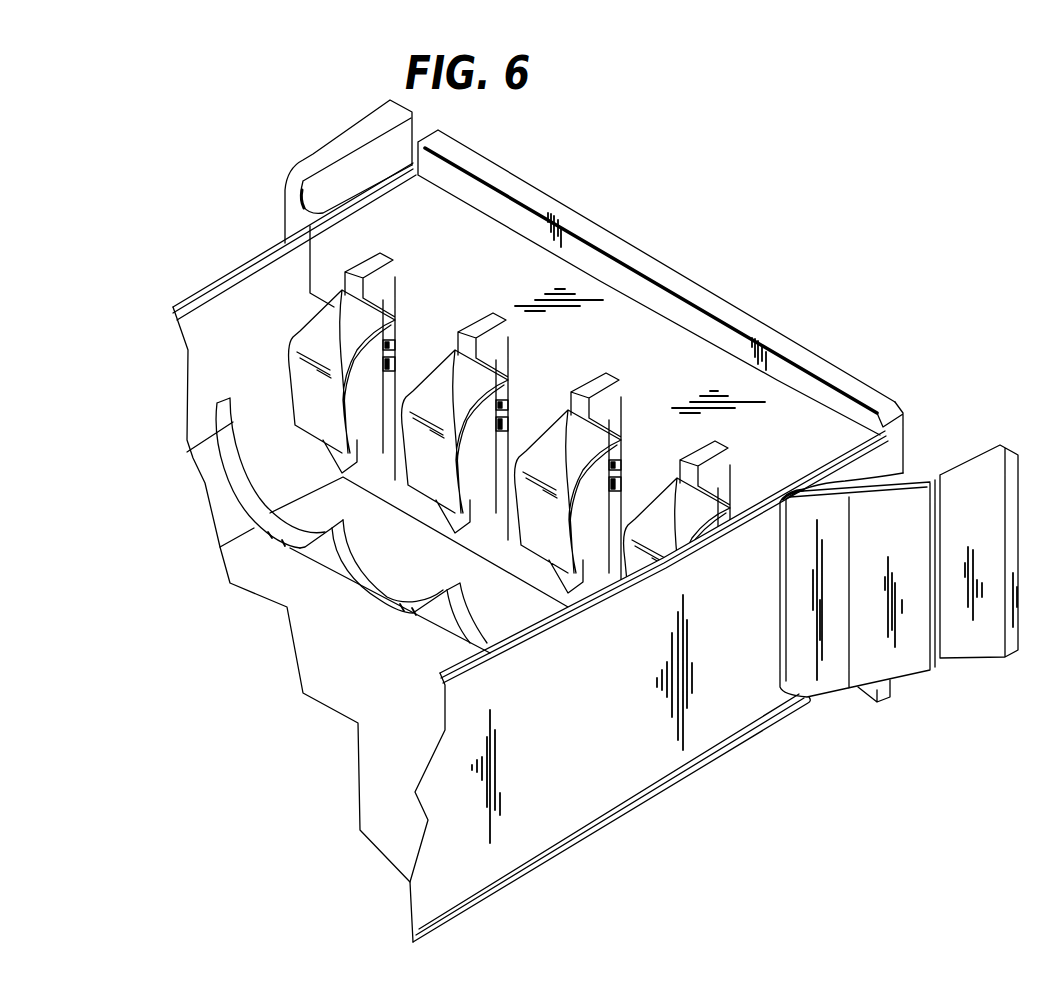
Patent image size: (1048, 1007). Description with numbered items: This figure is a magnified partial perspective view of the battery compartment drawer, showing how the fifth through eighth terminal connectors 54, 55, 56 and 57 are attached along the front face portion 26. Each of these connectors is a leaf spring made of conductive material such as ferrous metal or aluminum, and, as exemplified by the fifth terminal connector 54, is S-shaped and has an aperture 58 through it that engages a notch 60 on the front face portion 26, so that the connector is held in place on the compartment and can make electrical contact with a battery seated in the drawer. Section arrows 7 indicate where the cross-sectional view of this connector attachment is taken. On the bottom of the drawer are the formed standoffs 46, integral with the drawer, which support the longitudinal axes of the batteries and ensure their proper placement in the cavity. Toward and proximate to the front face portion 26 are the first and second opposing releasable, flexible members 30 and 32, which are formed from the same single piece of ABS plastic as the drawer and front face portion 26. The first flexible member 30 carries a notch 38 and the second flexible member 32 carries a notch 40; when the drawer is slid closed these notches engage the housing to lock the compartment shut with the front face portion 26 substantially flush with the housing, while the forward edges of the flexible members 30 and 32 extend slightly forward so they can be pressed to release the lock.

The section line 7- 7 is at (320, 391).
The front face portion 26 is at (762, 316).
The first flexible member 30 is at (977, 640).
The second flexible member 32 is at (313, 166).
The notch 38 is at (932, 652).
The notch 40 is at (326, 162).
The standoffs 46 is at (333, 557).
The fifth terminal connector 54 is at (392, 352).
The sixth terminal connector 55 is at (461, 346).
The seventh terminal connector 56 is at (563, 447).
The eighth terminal connector 57 is at (677, 503).
The aperture 58 is at (348, 411).
The notch 60 is at (399, 346).